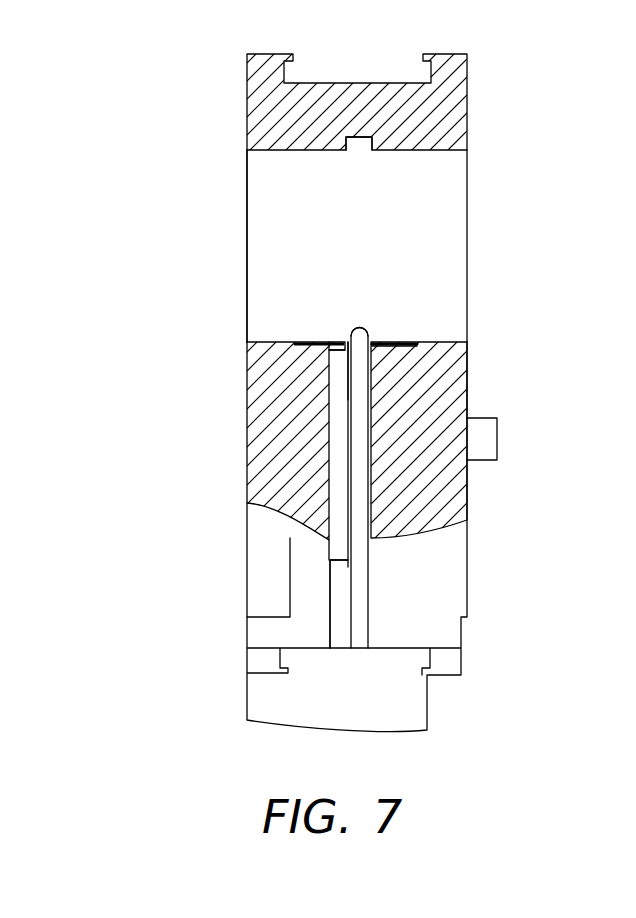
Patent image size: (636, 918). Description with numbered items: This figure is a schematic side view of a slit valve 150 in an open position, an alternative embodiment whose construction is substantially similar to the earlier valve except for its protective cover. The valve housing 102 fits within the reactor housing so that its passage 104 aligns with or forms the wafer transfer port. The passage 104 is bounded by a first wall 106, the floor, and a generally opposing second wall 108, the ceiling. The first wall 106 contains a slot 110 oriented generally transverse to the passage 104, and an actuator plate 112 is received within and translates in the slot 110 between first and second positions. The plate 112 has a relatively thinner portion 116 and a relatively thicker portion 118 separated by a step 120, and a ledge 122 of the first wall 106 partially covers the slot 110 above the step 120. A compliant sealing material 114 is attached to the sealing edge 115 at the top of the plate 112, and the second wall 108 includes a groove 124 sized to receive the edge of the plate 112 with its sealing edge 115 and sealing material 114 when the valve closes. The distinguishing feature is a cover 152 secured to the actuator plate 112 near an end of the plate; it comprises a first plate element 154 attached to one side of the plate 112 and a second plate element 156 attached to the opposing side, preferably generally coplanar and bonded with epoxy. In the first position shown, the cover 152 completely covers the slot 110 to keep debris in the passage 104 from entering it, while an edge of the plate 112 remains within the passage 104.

The slit valve 150 is at (132, 135).
The valve housing 102 is at (455, 120).
The passage 104 is at (418, 178).
The second wall 108 is at (265, 152).
The groove 124 is at (358, 142).
The slot 110 is at (340, 432).
The thinner portion 116 is at (360, 466).
The first wall 106 is at (467, 342).
The actuator plate 112 is at (372, 562).
The thicker portion 118 is at (353, 610).
The step 120 is at (341, 562).
The ledge 122 is at (290, 342).
The first plate element 154 is at (337, 342).
The sealing edge 115 is at (351, 336).
The compliant sealing material 114 is at (380, 336).
The cover 152 is at (402, 340).
The second plate element 156 is at (406, 341).